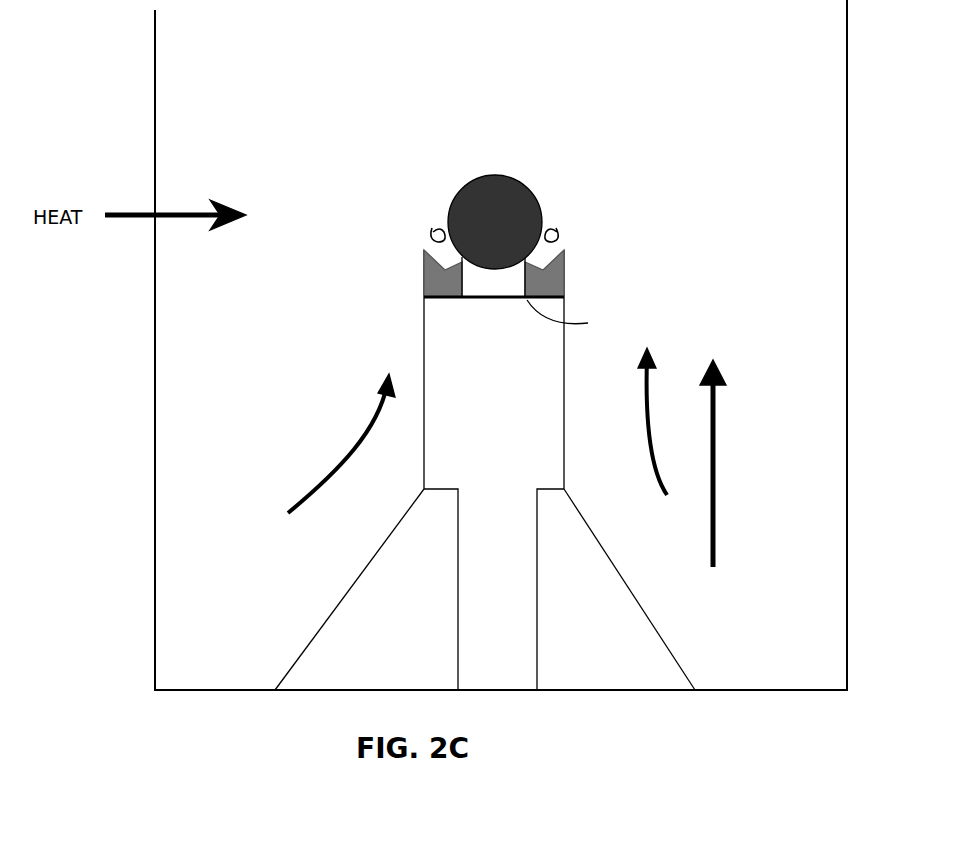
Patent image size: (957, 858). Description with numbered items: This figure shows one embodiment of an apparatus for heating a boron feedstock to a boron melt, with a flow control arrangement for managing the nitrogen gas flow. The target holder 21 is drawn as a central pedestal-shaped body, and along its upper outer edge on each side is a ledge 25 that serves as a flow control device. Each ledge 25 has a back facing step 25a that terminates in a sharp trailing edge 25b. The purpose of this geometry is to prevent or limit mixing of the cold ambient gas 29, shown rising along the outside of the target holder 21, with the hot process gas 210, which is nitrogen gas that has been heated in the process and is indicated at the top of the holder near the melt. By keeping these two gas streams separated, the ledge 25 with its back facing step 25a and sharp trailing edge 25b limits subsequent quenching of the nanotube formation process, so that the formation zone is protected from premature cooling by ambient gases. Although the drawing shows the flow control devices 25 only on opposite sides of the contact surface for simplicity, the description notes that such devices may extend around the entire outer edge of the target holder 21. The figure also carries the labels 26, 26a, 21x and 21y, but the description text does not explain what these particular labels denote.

The target holder 21 is at (516, 451).
The lateral direction of body 21x is at (380, 604).
The lateral direction of body 21y is at (588, 597).
The ledge 25 is at (424, 278).
The back facing step 25a is at (578, 318).
The sharp trailing edge 25b is at (424, 252).
The solder ball 26 is at (535, 192).
The solder material 26a is at (458, 300).
The cold ambient gas 29 is at (507, 457).
The hot process gas 210 is at (432, 222).